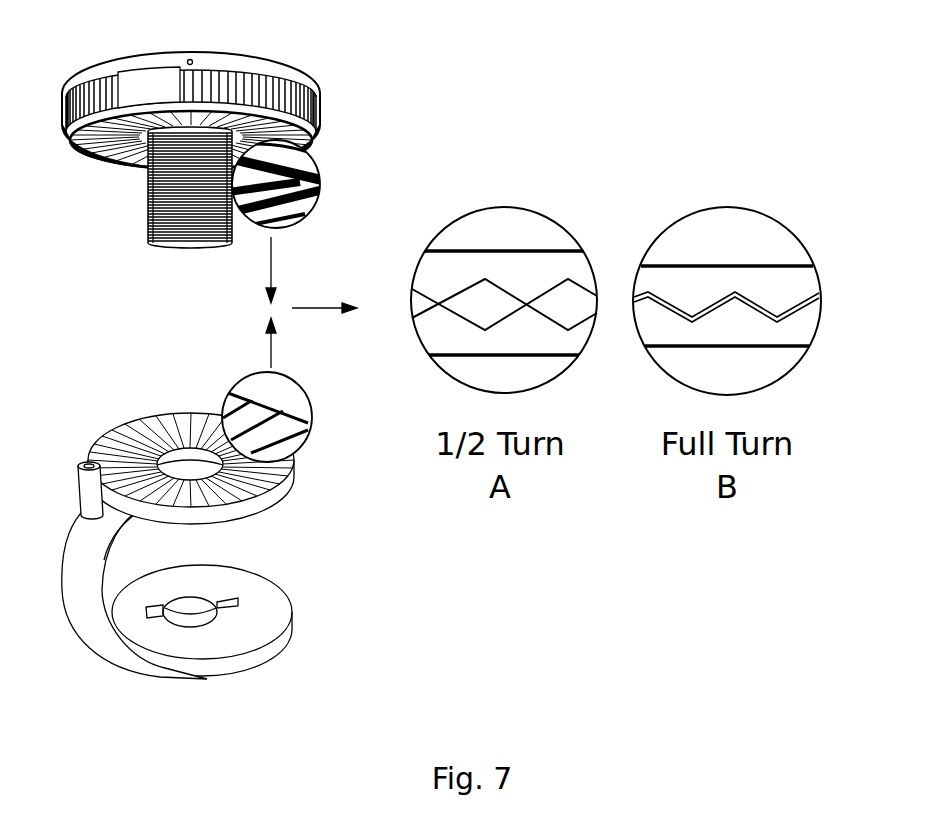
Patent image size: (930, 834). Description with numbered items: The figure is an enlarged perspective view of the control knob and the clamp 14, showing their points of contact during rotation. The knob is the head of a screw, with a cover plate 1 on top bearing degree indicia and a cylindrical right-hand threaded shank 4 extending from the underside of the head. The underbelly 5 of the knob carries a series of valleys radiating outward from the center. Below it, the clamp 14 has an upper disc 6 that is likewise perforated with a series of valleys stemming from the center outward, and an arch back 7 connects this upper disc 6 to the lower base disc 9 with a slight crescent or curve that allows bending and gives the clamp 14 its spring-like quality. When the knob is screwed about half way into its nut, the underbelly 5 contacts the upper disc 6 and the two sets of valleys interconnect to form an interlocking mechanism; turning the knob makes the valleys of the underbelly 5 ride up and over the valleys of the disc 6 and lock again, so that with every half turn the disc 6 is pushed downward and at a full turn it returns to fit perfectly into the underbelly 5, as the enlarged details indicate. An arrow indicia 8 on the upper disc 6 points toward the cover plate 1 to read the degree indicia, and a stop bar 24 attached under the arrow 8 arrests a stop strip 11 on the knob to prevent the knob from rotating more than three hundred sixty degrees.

The cover plate 1 is at (233, 63).
The stop strip 11 is at (152, 90).
The underbelly 5 is at (93, 147).
The shank 4 is at (147, 206).
The upper disc 6 is at (145, 432).
The arrow indicia 8 is at (85, 463).
The arch back 7 is at (82, 583).
The lower base disc 9 is at (210, 665).
The clamp 14 is at (284, 517).
The stop bar 24 is at (95, 500).